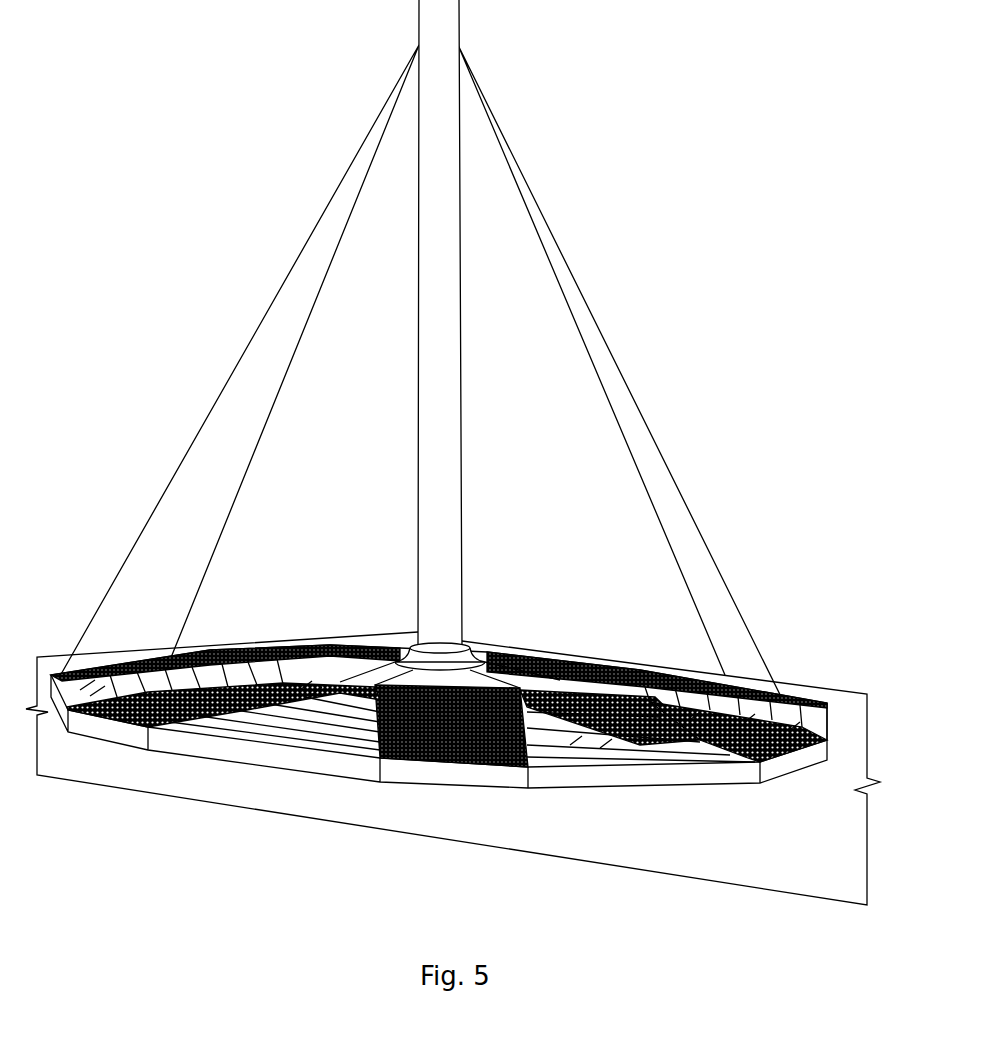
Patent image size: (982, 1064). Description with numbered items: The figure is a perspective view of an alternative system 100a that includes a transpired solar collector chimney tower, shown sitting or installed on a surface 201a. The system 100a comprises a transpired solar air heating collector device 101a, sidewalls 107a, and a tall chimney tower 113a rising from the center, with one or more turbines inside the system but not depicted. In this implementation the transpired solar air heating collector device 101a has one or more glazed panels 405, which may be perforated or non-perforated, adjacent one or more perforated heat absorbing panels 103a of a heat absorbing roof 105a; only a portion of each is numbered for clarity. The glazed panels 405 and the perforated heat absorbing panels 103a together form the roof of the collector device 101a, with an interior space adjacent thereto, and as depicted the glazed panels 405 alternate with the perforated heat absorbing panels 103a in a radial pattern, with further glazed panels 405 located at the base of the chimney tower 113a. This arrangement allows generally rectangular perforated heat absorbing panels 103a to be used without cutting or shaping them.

The system 100a is at (214, 897).
The transpired solar air heating collector device 101a is at (166, 659).
The perforated heat absorbing panels 103a is at (526, 709).
The heat absorbing roof 105a is at (140, 722).
The sidewalls 107a is at (498, 776).
The chimney tower 113a is at (433, 3).
The surface 201a is at (453, 768).
The glazed panels 405 is at (441, 710).